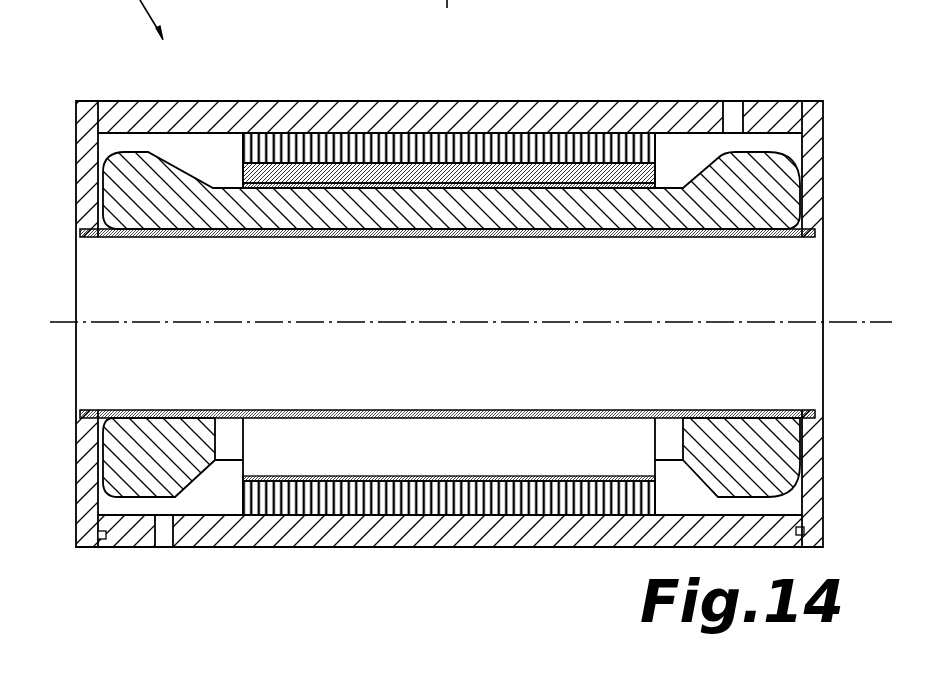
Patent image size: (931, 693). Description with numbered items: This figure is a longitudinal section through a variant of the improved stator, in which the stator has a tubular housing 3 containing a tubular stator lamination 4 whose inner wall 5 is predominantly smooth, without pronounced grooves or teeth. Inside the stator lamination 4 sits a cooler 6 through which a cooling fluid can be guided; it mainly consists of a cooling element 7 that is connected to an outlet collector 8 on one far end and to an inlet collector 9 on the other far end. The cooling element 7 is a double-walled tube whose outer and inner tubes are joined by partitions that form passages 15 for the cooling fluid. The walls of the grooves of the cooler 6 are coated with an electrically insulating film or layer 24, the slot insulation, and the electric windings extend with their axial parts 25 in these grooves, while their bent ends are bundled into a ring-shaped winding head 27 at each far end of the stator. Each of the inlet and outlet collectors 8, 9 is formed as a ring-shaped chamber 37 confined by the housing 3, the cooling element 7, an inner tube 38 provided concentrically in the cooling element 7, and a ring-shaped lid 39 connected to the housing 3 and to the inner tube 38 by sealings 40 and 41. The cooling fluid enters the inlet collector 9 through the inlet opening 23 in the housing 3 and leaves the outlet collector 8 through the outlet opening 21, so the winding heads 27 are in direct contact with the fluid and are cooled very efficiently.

The housing 3 is at (250, 547).
The stator lamination 4 is at (342, 133).
The inner wall 5 is at (563, 163).
The cooler 6 is at (778, 100).
The cooling element 7 is at (411, 481).
The outlet collector 8 is at (690, 138).
The inlet collector 9 is at (199, 147).
The passages 15 is at (532, 460).
The outlet opening 21 is at (738, 101).
The inlet opening 23 is at (164, 547).
The electrically insulating film or layer 24 is at (488, 165).
The axial parts 25 is at (417, 207).
The winding head 27 is at (152, 180).
The ring-shaped chamber 37 is at (673, 140).
The inner tube 38 is at (760, 410).
The ring-shaped lid 39 is at (823, 150).
The sealing 40 is at (118, 101).
The sealing 41 is at (814, 238).